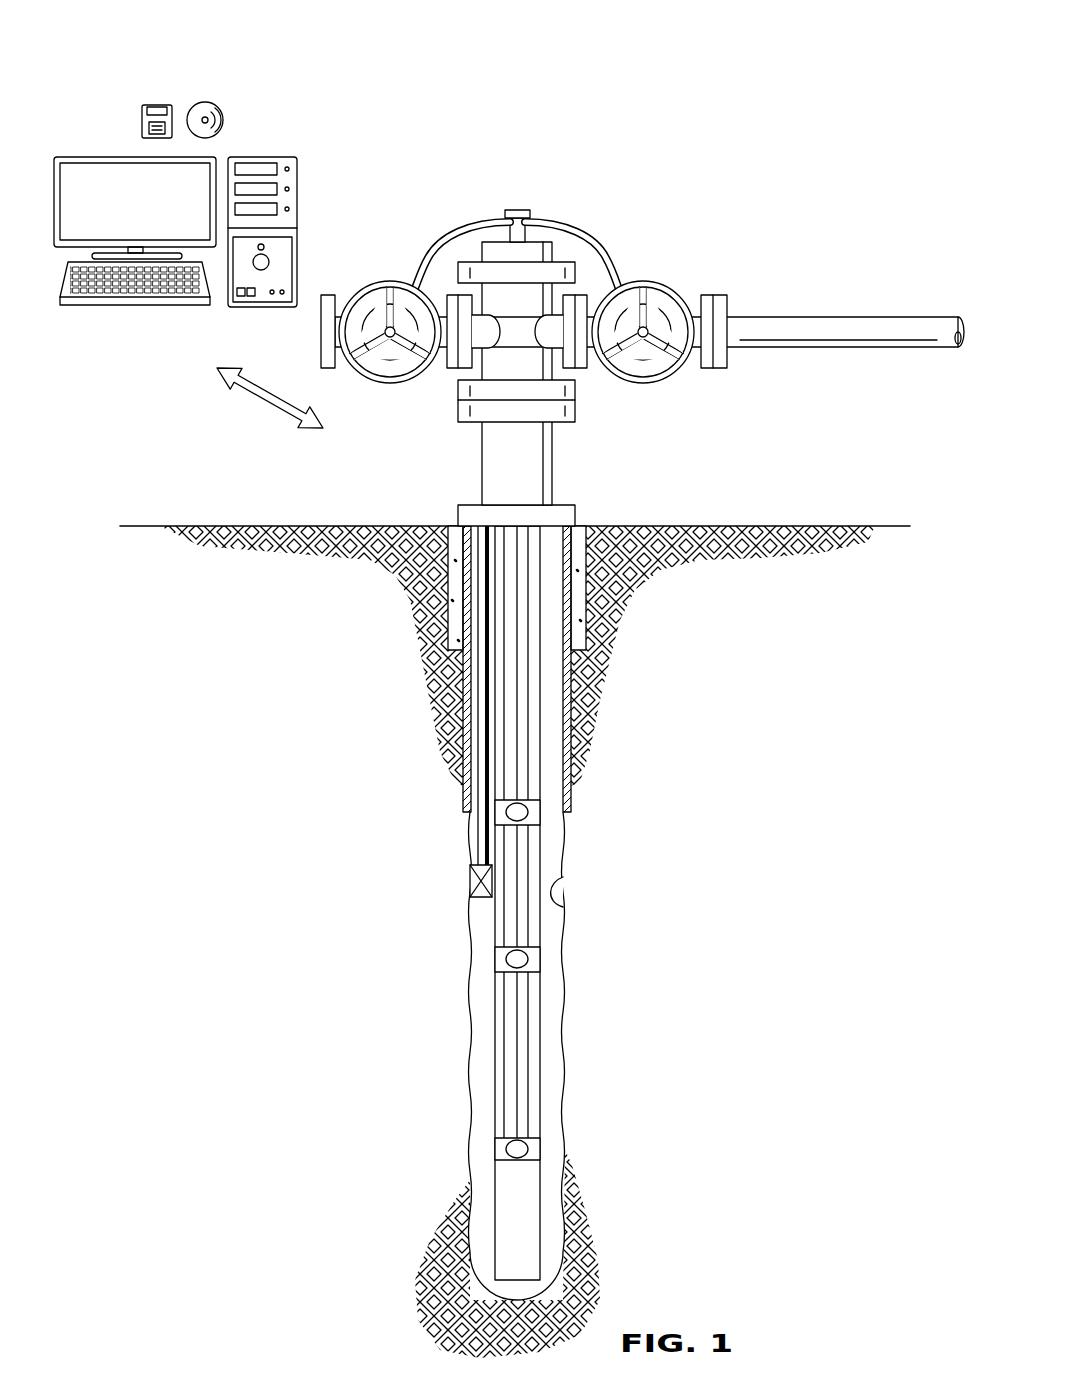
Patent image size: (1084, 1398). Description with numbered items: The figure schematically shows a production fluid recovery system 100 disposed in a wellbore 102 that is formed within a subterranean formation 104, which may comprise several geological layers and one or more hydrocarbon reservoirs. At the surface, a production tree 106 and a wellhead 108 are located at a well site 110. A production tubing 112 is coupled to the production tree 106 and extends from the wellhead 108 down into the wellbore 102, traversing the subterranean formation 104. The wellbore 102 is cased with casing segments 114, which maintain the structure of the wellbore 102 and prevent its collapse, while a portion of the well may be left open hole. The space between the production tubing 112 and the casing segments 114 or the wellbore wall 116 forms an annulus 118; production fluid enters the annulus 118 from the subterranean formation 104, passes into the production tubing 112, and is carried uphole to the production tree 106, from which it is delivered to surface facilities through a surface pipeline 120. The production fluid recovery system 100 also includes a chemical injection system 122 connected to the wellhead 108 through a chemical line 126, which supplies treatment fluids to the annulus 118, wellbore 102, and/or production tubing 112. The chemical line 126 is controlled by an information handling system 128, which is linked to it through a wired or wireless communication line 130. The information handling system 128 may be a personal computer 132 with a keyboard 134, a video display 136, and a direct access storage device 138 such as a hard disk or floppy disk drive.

The production fluid recovery system 100 is at (686, 160).
The wellbore 102 is at (570, 994).
The subterranean formation 104 is at (757, 627).
The production tree 106 is at (457, 388).
The wellhead 108 is at (553, 463).
The well site 110 is at (440, 508).
The production tubing 112 is at (542, 790).
The casing segments 114 is at (573, 722).
The wellbore wall 116 is at (565, 905).
The annulus 118 is at (548, 682).
The surface pipeline 120 is at (816, 316).
The chemical injection system 122 is at (470, 880).
The chemical line 126 is at (483, 848).
The information handling system 128 is at (88, 60).
The communication line 130 is at (262, 408).
The personal computer 132 is at (300, 183).
The keyboard 134 is at (100, 306).
The video display 136 is at (92, 157).
The direct access storage device 138 is at (158, 106).